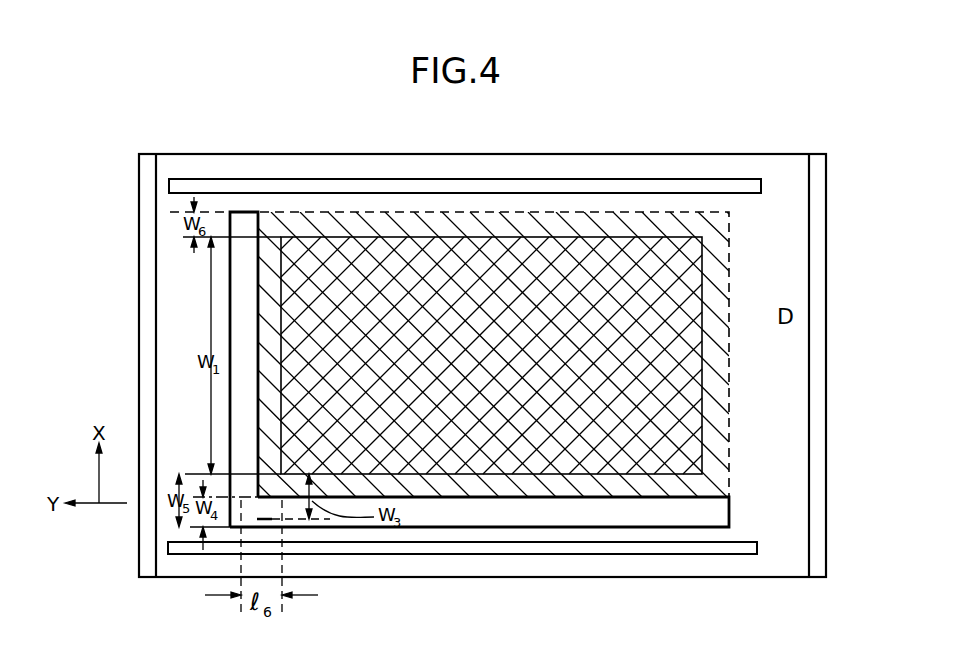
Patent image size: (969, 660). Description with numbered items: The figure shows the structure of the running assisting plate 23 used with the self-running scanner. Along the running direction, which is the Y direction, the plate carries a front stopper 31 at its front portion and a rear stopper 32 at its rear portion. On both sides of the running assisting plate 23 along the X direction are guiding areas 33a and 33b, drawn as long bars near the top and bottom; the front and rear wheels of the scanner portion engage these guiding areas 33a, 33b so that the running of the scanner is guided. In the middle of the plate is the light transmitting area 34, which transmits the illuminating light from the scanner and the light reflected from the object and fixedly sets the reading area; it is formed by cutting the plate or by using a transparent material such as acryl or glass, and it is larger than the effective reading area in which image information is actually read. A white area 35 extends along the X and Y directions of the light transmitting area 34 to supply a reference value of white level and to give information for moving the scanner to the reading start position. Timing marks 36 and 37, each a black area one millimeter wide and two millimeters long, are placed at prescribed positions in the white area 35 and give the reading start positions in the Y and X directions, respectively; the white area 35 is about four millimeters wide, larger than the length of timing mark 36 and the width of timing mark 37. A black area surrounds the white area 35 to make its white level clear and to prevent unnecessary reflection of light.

The running assisting plate 23 is at (115, 141).
The front stopper 31 is at (151, 378).
The rear stopper 32 is at (827, 418).
The guiding area 33a is at (718, 554).
The guiding area 33b is at (732, 190).
The light transmitting area 34 is at (729, 452).
The white area 35 is at (705, 513).
The timing mark 36 is at (243, 509).
The timing mark 37 is at (266, 526).